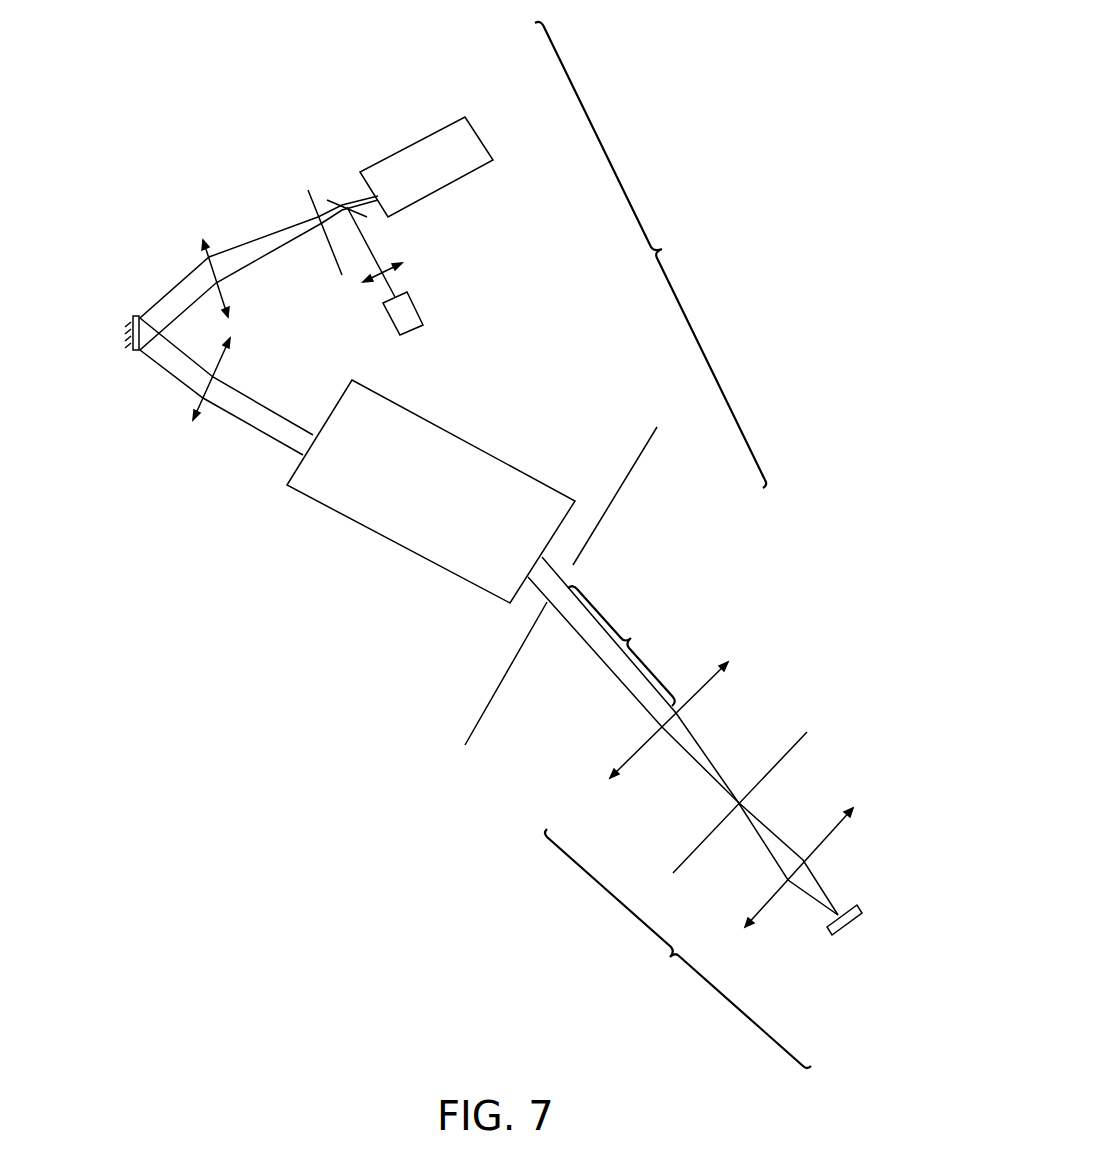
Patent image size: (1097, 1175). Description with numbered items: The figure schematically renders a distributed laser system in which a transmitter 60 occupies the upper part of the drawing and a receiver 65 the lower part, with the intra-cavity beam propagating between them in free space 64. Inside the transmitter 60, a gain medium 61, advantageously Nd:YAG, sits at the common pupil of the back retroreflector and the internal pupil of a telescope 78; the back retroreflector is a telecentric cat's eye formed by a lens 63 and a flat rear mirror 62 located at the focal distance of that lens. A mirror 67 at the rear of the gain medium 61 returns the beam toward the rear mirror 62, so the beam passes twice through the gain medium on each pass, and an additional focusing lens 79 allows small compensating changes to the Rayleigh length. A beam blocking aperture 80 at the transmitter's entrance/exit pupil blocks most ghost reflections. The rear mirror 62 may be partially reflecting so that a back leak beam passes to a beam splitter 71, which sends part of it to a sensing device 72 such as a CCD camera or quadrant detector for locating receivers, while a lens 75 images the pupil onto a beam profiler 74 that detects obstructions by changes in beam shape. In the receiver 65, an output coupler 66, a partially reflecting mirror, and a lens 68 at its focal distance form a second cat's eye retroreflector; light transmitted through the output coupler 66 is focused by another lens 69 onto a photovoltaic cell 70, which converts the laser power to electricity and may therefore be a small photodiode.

The transmitter 60 is at (650, 255).
The gain medium 61 is at (140, 352).
The rear mirror 62 is at (306, 191).
The lens 63 is at (202, 241).
The free space 64 is at (621, 646).
The receiver 65 is at (678, 948).
The output coupler 66 is at (808, 732).
The mirror 67 is at (124, 327).
The lens 68 is at (731, 659).
The lens 69 is at (856, 806).
The photovoltaic cell 70 is at (862, 908).
The beam splitter 71 is at (330, 198).
The sensing device 72 is at (488, 128).
The beam profiler 74 is at (423, 322).
The lens 75 is at (403, 263).
The telescope 78 is at (430, 420).
The focusing lens 79 is at (193, 423).
The beam blocking aperture 80 is at (466, 742).